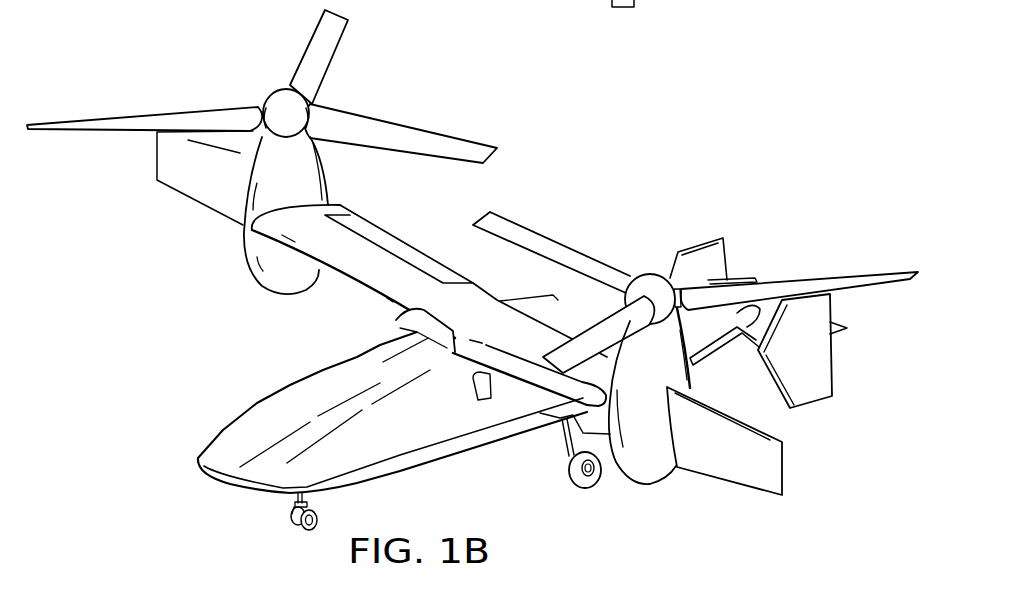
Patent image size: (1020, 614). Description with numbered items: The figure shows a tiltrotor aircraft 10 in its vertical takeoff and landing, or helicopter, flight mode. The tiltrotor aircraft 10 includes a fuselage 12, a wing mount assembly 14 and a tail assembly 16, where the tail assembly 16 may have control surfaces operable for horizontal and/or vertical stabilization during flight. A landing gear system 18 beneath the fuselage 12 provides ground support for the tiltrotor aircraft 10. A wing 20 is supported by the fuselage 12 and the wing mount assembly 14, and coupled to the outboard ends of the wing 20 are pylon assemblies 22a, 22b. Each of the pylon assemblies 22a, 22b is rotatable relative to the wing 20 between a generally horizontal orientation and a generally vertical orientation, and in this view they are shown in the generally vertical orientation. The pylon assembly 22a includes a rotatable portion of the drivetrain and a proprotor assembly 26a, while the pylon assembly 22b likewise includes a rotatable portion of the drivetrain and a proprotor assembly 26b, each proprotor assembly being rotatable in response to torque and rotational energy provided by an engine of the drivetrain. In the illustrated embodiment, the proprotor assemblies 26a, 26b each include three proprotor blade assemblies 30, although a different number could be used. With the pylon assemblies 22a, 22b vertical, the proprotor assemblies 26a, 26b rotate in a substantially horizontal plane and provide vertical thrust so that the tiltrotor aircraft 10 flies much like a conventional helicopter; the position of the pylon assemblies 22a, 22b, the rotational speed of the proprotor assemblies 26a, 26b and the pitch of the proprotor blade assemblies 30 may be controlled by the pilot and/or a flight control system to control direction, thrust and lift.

The tiltrotor aircraft 10 is at (620, 133).
The fuselage 12 is at (243, 410).
The wing mount assembly 14 is at (388, 331).
The tail assembly 16 is at (840, 333).
The landing gear system 18 is at (308, 535).
The wing 20 is at (372, 253).
The pylon assembly 22a is at (665, 482).
The pylon assembly 22b is at (272, 296).
The proprotor assembly 26a is at (647, 274).
The proprotor assembly 26b is at (278, 86).
The proprotor blade assembly 30 is at (112, 115).